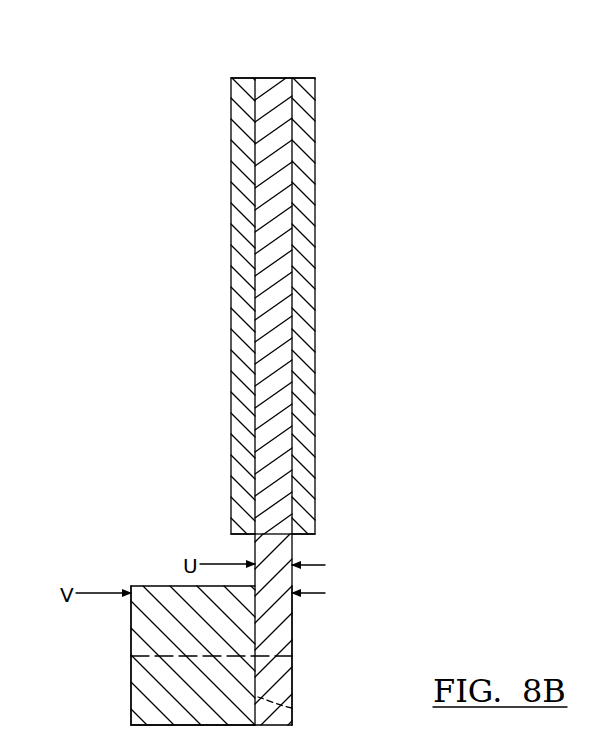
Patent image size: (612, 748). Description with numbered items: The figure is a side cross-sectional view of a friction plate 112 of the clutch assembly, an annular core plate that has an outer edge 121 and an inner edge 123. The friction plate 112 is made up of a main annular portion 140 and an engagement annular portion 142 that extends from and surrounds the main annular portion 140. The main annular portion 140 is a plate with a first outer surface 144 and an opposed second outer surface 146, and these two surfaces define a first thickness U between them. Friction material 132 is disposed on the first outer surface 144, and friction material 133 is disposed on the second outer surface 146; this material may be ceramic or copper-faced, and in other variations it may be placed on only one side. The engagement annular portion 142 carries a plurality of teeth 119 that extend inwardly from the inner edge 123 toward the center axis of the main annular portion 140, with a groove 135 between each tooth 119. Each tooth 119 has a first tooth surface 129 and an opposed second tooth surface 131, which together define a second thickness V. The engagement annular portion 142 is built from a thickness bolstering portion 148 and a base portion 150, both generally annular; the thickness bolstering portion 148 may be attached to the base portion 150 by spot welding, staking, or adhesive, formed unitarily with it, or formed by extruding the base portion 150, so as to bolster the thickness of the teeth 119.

The friction plate 112 is at (197, 266).
The outer edge 121 is at (272, 78).
The main annular portion 140 is at (275, 232).
The friction material 132 is at (318, 232).
The friction material 133 is at (231, 372).
The first outer surface 144 is at (293, 548).
The second outer surface 146 is at (212, 512).
The thickness bolstering portion 148 is at (148, 607).
The base portion 150 is at (280, 607).
The engagement annular portion 142 is at (131, 620).
The tooth 119 is at (148, 672).
The second tooth surface 131 is at (130, 682).
The inner edge 123 is at (163, 726).
The first tooth surface 129 is at (293, 682).
The groove 135 is at (292, 708).